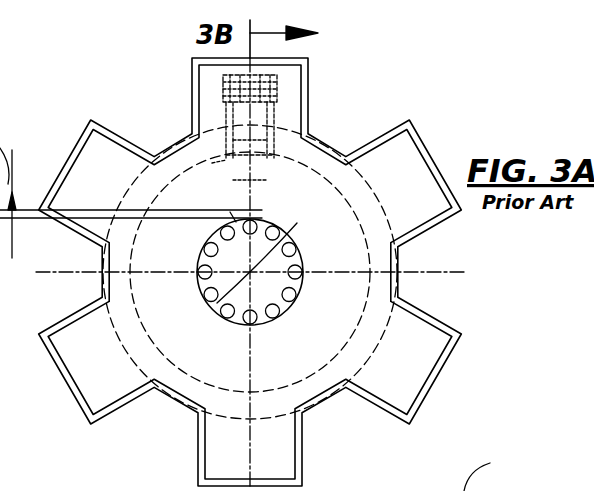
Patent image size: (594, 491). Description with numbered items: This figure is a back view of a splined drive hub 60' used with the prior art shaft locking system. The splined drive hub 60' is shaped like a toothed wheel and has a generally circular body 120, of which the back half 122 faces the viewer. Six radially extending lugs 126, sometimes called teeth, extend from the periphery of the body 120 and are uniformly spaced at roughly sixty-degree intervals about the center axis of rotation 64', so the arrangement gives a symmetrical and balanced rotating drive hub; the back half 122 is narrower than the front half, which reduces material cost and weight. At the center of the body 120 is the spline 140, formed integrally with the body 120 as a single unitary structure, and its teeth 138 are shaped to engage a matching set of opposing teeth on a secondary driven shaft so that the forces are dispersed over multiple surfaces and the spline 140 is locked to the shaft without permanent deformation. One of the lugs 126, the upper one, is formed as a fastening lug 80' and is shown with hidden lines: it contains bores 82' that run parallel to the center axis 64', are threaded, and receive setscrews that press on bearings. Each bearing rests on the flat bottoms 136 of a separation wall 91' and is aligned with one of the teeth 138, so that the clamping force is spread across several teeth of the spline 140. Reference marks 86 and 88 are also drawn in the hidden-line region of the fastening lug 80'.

The body 120 is at (410, 262).
The back half 122 is at (427, 307).
The lugs 126 is at (140, 135).
The splined drive hub 60' is at (397, 279).
The fastening lug 80' is at (302, 129).
The bore 86 is at (280, 148).
The thread 88 is at (280, 184).
The flat bottoms 136 is at (212, 163).
The spline 140 is at (313, 290).
The teeth 138 is at (302, 293).
The center axis of rotation 64' is at (270, 254).
The separation wall 91' is at (209, 205).
The bores 82' is at (496, 468).